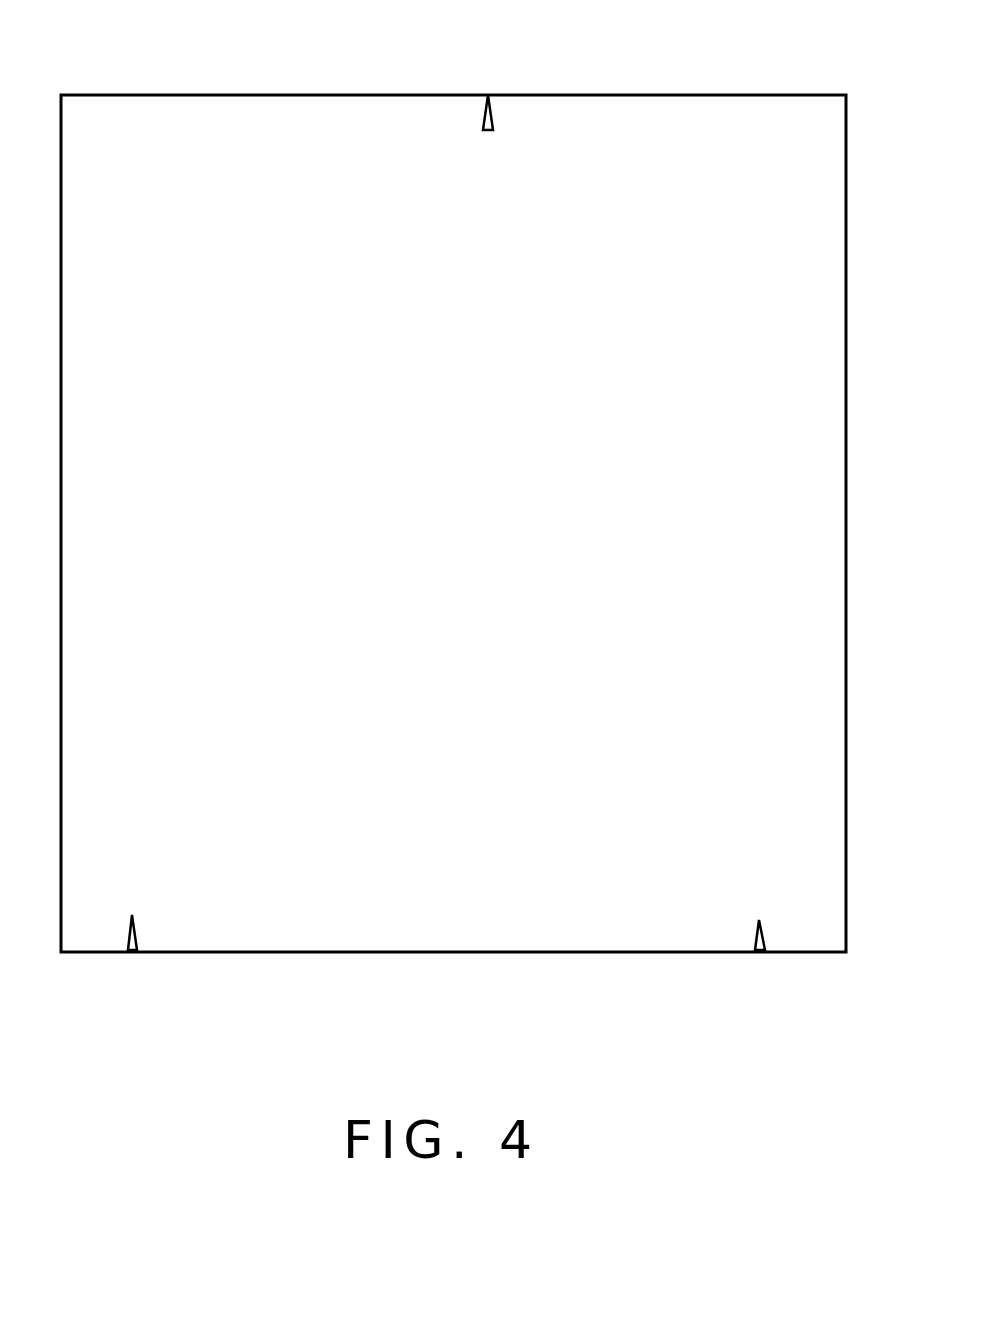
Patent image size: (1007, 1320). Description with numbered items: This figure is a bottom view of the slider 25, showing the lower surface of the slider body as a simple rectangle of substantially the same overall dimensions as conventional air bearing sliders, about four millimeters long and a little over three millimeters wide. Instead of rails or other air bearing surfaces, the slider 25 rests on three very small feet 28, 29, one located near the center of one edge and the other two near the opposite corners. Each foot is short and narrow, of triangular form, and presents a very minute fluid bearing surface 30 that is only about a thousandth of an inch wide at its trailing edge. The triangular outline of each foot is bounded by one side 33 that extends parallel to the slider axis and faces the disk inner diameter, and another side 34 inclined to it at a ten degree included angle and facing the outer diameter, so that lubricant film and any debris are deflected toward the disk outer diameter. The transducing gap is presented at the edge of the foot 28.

The slider 25 is at (758, 243).
The foot 28 is at (127, 950).
The foot 29 is at (492, 114).
The fluid bearing surface 30 is at (487, 106).
The foot side parallel to slider axis 33 is at (487, 113).
The inclined foot side 34 is at (490, 100).